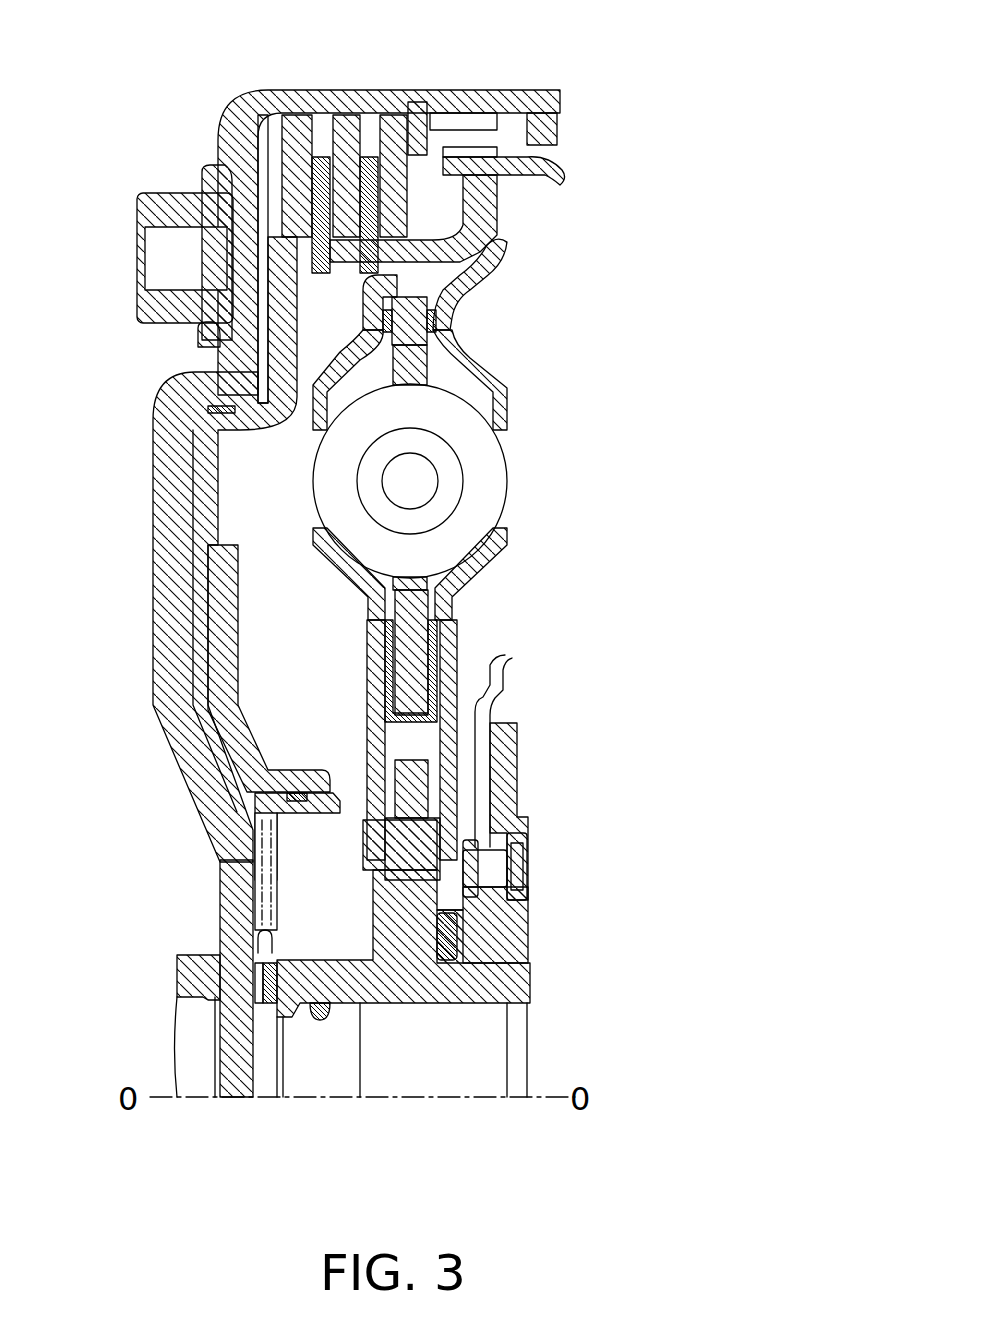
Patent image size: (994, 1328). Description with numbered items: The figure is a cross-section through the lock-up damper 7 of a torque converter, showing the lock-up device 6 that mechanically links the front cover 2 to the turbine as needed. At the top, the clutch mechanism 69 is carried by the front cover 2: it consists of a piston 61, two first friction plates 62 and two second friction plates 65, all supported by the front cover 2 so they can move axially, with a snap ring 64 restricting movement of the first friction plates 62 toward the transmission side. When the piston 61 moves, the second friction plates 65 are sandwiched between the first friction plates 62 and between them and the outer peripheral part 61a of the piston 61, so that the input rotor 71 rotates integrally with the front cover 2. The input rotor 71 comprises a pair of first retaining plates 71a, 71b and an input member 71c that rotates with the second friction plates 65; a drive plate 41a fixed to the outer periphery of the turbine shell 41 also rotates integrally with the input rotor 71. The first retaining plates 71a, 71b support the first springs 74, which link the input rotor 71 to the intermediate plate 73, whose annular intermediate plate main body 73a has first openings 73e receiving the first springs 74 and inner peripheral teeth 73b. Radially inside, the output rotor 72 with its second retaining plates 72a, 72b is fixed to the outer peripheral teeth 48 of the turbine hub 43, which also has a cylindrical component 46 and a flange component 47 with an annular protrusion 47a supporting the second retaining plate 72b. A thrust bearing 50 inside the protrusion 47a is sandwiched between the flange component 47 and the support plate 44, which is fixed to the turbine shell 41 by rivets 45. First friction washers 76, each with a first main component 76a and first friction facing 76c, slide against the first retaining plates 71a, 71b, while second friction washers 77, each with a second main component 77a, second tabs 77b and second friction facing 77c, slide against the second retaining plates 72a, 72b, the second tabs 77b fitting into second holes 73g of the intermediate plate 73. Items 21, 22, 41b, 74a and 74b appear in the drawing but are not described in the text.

The front cover 2 is at (369, 211).
The lock-up device 6 is at (485, 594).
The lock-up damper 7 is at (349, 440).
The lower housing wall 21 is at (270, 868).
The fixing flange 22 is at (267, 980).
The turbine shell 41 is at (483, 743).
The drive plate 41a is at (566, 168).
The upper tab 41b is at (540, 113).
The turbine hub 43 is at (540, 985).
The support plate 44 is at (505, 778).
The rivets 45 is at (500, 857).
The cylindrical component 46 is at (455, 993).
The flange component 47 is at (445, 935).
The annular protrusion 47a is at (443, 875).
The outer peripheral teeth 48 is at (432, 810).
The thrust bearing 50 is at (443, 967).
The piston 61 is at (200, 470).
The outer peripheral part of the piston 61a is at (268, 90).
The first friction plates 62 is at (300, 150).
The snap ring 64 is at (418, 104).
The second friction plates 65 is at (320, 157).
The clutch mechanism 69 is at (266, 172).
The input rotor 71 is at (462, 215).
The first retaining plate 71a is at (478, 232).
The first retaining plate 71b is at (500, 397).
The input member 71c is at (468, 113).
The output rotor 72 is at (331, 612).
The second retaining plate 72a is at (380, 700).
The second retaining plate 72b is at (447, 637).
The intermediate plate 73 is at (240, 397).
The intermediate plate main body 73a is at (395, 595).
The inner peripheral teeth 73b is at (262, 822).
The first openings 73e is at (208, 412).
The second holes 73g is at (262, 778).
The first springs 74 is at (466, 481).
The roller ring 74a is at (490, 462).
The roller bore 74b is at (455, 478).
The first friction washers 76 is at (329, 319).
The first main component 76a is at (383, 322).
The first friction facing 76c is at (365, 310).
The second friction washers 77 is at (360, 687).
The second main component 77a is at (380, 667).
The second tabs 77b is at (367, 737).
The second friction facing 77c is at (367, 637).